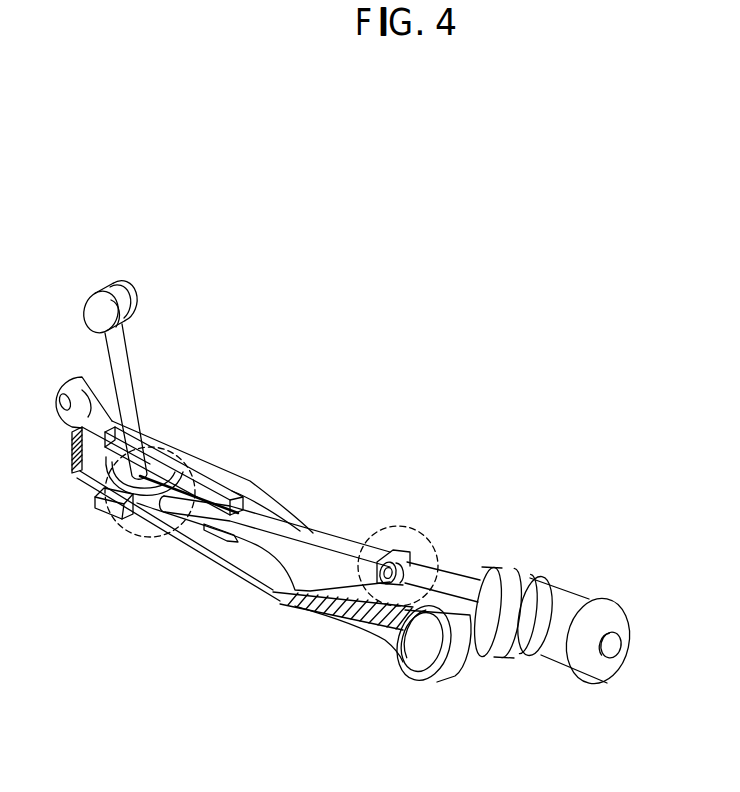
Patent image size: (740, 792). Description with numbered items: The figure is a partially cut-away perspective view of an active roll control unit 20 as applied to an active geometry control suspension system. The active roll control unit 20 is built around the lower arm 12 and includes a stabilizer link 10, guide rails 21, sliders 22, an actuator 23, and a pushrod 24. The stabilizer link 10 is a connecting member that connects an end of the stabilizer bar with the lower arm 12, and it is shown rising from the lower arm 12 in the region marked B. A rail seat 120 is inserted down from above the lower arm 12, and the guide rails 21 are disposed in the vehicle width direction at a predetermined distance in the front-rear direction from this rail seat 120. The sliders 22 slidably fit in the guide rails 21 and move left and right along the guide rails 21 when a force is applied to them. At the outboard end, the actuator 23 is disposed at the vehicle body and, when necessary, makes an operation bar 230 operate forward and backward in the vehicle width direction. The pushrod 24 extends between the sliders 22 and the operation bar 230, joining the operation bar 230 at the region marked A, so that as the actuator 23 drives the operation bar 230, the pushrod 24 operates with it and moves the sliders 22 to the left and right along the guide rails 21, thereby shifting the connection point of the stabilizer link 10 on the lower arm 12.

The stabilizer link 10 is at (121, 356).
The lower arm 12 is at (280, 508).
The rail seat 120 is at (250, 557).
The active roll control unit 20 is at (380, 445).
The guide rails 21 is at (217, 490).
The sliders 22 is at (118, 520).
The actuator 23 is at (575, 597).
The pushrod 24 is at (328, 545).
The operation bar 230 is at (458, 567).
The region A is at (428, 537).
The region B is at (178, 452).